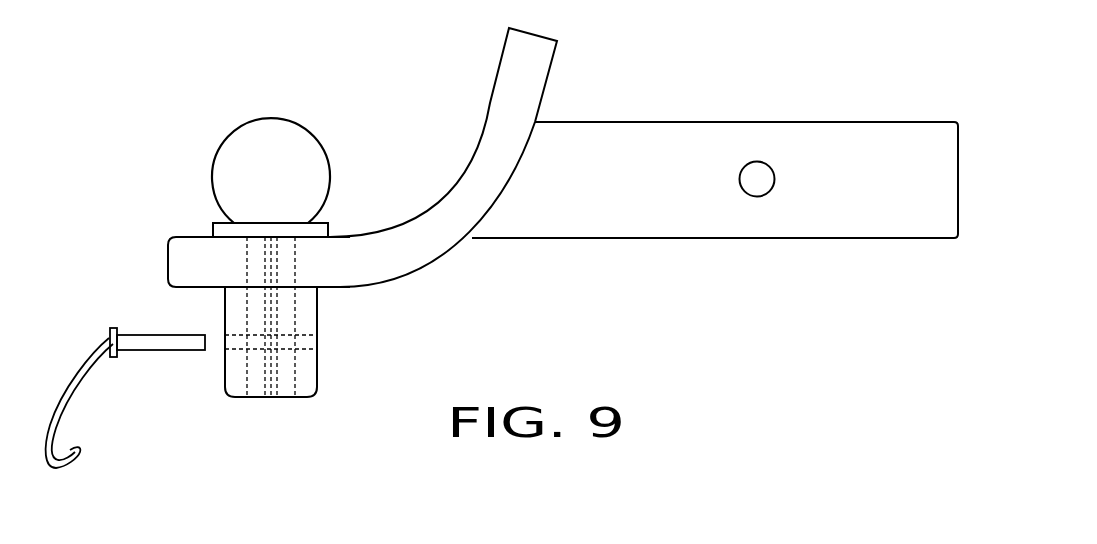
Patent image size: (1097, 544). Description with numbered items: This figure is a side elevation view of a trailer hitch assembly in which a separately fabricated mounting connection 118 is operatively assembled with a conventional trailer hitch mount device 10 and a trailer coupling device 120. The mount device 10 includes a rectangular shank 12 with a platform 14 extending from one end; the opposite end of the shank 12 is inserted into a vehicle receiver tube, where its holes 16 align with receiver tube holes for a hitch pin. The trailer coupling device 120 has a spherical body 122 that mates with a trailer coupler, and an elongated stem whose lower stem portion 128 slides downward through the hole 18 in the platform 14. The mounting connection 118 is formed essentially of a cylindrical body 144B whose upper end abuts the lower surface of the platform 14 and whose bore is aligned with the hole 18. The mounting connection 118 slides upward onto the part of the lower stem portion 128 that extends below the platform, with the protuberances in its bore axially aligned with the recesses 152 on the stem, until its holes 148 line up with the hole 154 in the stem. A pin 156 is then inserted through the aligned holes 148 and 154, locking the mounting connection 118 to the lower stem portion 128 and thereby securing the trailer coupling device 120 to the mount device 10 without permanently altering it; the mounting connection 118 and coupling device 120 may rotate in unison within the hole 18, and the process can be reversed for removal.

The trailer hitch mount device 10 is at (678, 252).
The shank 12 is at (673, 122).
The platform 14 is at (407, 258).
The holes 16 is at (763, 197).
The hole 18 is at (295, 260).
The mounting connection 118 is at (306, 416).
The trailer coupling device 120 is at (213, 129).
The spherical body 122 is at (315, 137).
The lower stem portion 128 is at (287, 277).
The cylindrical body 144B is at (242, 398).
The holes 148 is at (238, 350).
The recesses 152 is at (268, 270).
The hole 154 is at (287, 349).
The pin 156 is at (155, 335).